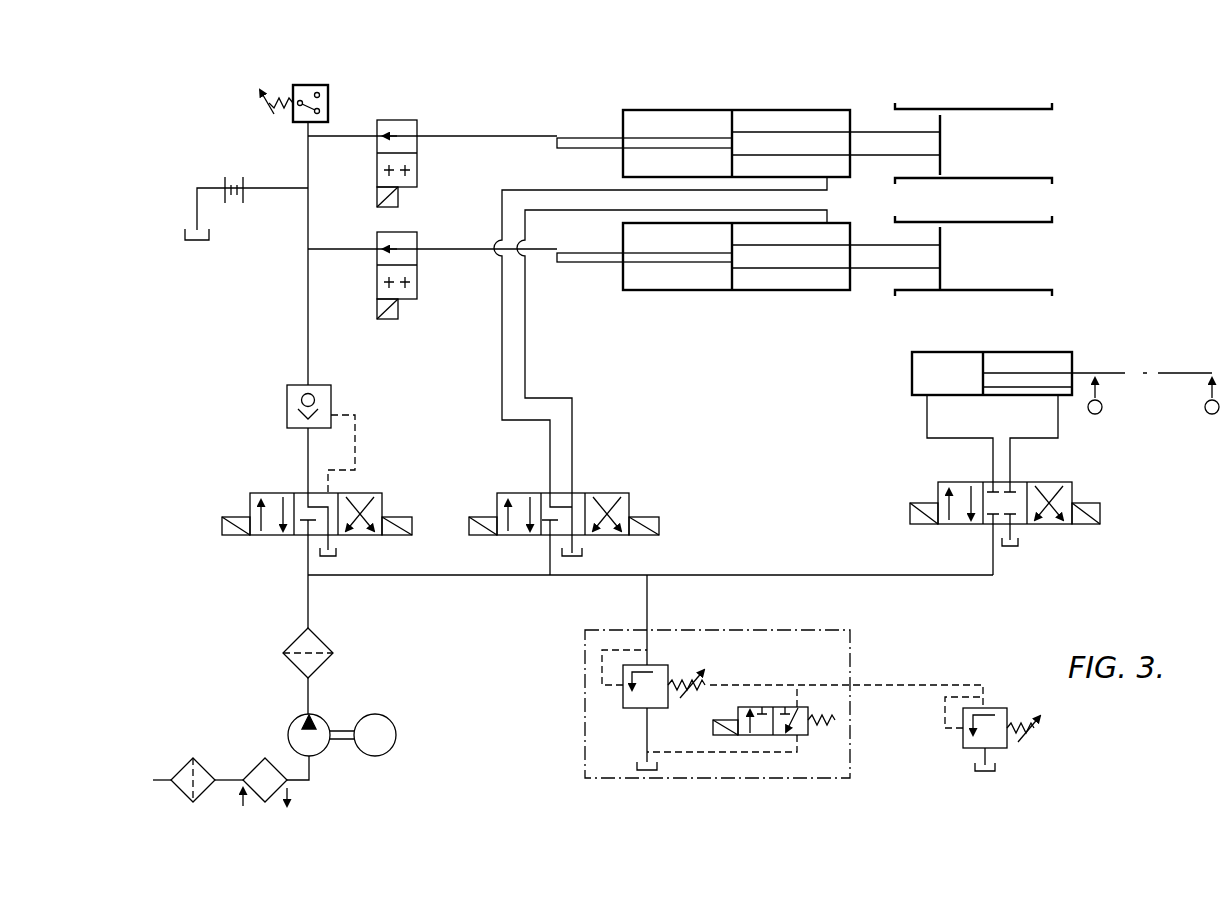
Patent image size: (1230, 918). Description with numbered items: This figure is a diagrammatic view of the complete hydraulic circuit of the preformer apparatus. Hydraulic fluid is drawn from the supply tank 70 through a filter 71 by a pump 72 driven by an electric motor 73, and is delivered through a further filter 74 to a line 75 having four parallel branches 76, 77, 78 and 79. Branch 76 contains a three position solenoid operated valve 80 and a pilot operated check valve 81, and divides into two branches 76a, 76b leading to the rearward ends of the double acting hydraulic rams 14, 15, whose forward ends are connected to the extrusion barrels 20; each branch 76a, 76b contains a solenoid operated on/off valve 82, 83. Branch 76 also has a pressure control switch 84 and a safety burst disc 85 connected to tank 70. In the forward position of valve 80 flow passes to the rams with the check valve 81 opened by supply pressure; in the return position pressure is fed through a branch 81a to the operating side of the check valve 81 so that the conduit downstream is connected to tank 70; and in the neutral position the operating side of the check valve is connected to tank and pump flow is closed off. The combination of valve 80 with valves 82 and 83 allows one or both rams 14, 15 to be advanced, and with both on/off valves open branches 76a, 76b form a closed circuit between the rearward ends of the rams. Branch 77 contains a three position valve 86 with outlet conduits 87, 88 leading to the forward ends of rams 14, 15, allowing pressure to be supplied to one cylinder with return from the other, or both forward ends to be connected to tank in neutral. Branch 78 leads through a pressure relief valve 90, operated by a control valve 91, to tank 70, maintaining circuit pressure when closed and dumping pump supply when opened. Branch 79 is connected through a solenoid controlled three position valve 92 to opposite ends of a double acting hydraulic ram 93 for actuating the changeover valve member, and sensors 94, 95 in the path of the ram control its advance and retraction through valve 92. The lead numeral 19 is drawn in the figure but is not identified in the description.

The double acting hydraulic ram 14 is at (650, 110).
The double acting hydraulic ram 15 is at (645, 290).
The piston rod tube 19 is at (576, 138).
The extrusion barrel 20 is at (985, 109).
The supply tank 70 is at (198, 241).
The filter 71 is at (190, 760).
The pump 72 is at (325, 750).
The electric motor 73 is at (375, 756).
The further filter 74 is at (293, 645).
The line 75 is at (376, 578).
The branch 76 is at (308, 568).
The branch 76a is at (483, 136).
The branch 76b is at (455, 249).
The branch 77 is at (550, 560).
The branch 78 is at (647, 600).
The branch 79 is at (993, 555).
The three position solenoid operated valve 80 is at (280, 490).
The pilot operated check valve 81 is at (290, 385).
The branch 81a is at (358, 443).
The solenoid operated on/off valve 82 is at (397, 120).
The solenoid operated on/off valve 83 is at (380, 232).
The pressure control switch 84 is at (306, 85).
The safety burst disc 85 is at (236, 203).
The three position valve 86 is at (510, 483).
The outlet conduit 87 is at (502, 360).
The outlet conduit 88 is at (525, 350).
The pressure relief valve 90 is at (623, 692).
The control valve 91 is at (810, 737).
The three position valve 92 is at (1076, 536).
The double acting hydraulic ram 93 is at (912, 372).
The sensor 94 is at (1101, 413).
The sensor 95 is at (1210, 414).